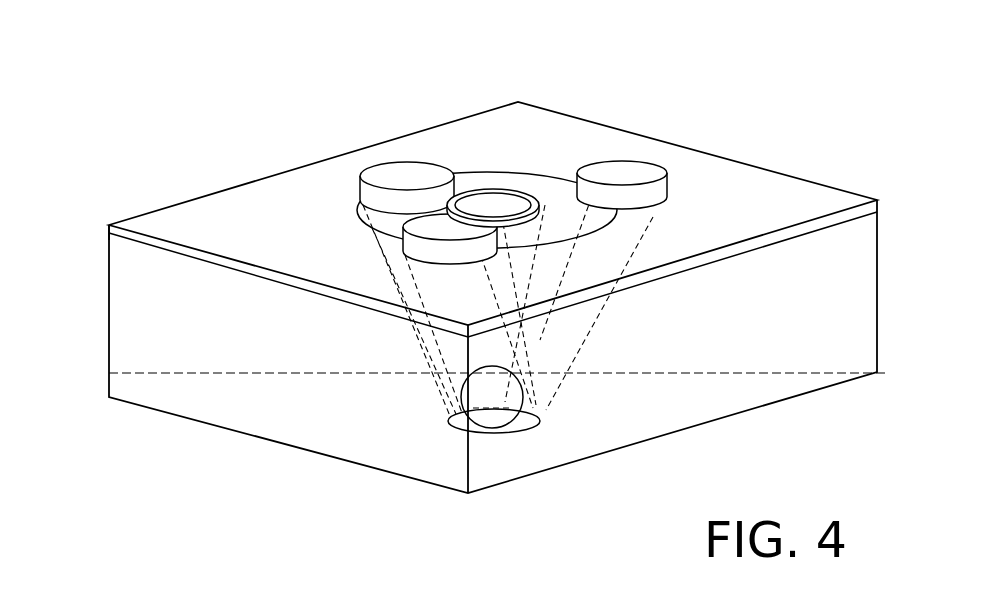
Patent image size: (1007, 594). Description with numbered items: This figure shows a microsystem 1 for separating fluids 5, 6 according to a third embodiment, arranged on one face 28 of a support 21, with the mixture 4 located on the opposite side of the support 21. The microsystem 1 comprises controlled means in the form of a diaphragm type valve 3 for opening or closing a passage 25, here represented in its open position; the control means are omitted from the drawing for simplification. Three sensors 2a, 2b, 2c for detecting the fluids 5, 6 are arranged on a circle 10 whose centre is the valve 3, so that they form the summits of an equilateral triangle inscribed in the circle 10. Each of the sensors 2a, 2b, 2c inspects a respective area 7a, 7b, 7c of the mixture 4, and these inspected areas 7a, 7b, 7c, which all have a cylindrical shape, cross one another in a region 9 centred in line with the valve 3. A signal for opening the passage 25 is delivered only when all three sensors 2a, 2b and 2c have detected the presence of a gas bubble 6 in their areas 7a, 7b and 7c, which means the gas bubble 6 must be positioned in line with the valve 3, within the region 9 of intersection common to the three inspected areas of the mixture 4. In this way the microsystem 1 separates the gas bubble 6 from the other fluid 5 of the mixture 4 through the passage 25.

The microsystem 1 is at (628, 82).
The sensor 2a is at (403, 163).
The sensor 2b is at (640, 175).
The sensor 2c is at (433, 228).
The valve 3 is at (456, 190).
The passage 25 is at (492, 190).
The circle 10 is at (530, 170).
The face 28 is at (178, 222).
The support 21 is at (108, 228).
The mixture 4 is at (850, 266).
The fluid 5 is at (838, 362).
The inspected area 7a is at (407, 279).
The inspected area 7b is at (565, 356).
The inspected area 7c is at (437, 302).
The gas bubble 6 is at (495, 415).
The region 9 is at (528, 420).